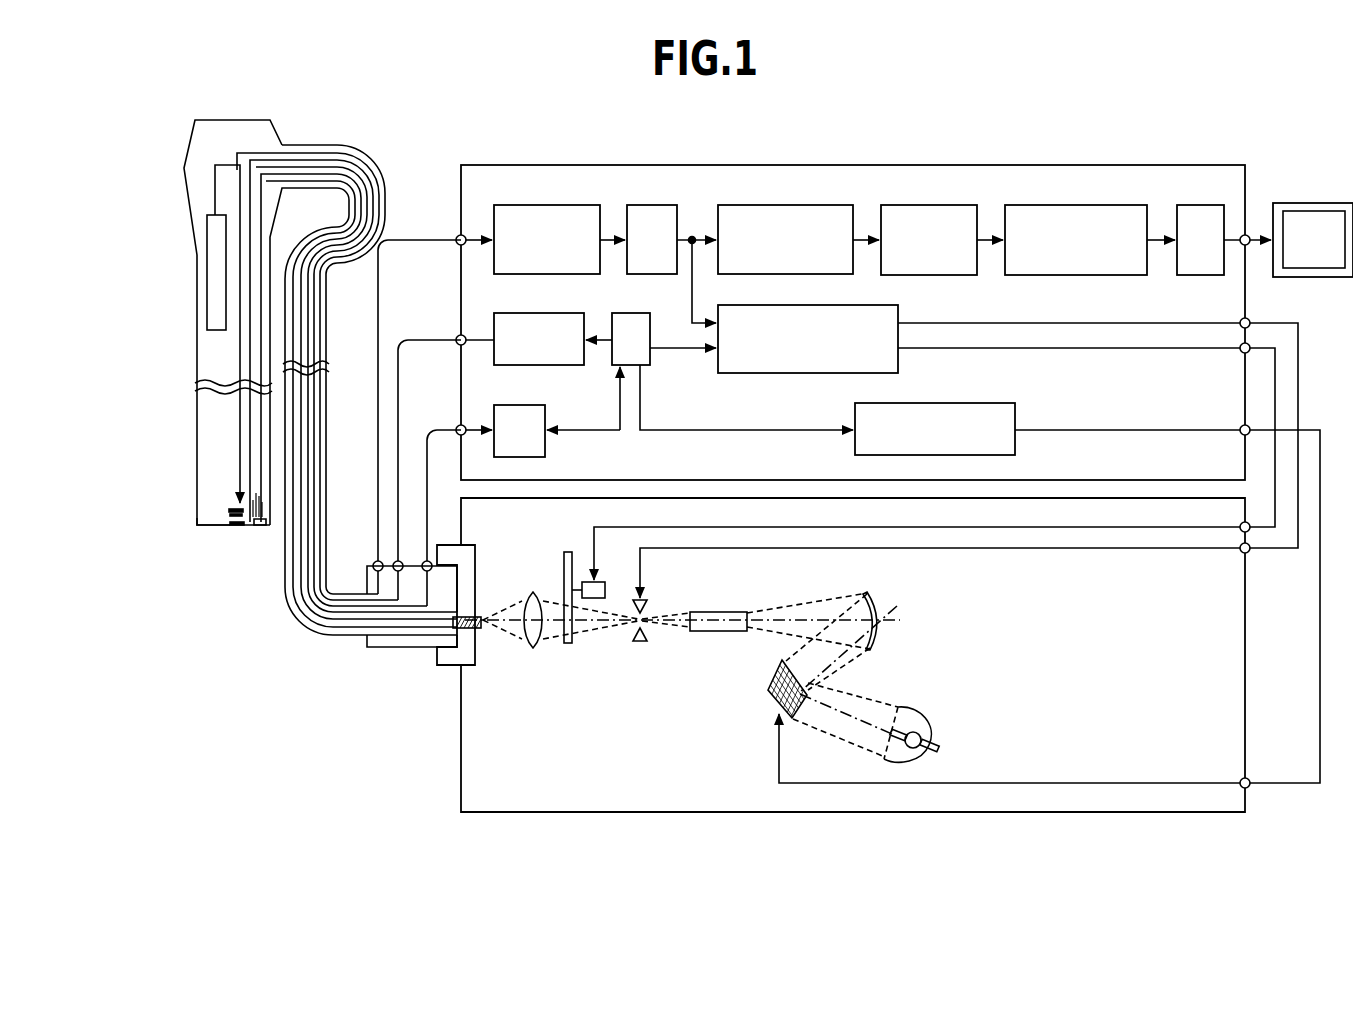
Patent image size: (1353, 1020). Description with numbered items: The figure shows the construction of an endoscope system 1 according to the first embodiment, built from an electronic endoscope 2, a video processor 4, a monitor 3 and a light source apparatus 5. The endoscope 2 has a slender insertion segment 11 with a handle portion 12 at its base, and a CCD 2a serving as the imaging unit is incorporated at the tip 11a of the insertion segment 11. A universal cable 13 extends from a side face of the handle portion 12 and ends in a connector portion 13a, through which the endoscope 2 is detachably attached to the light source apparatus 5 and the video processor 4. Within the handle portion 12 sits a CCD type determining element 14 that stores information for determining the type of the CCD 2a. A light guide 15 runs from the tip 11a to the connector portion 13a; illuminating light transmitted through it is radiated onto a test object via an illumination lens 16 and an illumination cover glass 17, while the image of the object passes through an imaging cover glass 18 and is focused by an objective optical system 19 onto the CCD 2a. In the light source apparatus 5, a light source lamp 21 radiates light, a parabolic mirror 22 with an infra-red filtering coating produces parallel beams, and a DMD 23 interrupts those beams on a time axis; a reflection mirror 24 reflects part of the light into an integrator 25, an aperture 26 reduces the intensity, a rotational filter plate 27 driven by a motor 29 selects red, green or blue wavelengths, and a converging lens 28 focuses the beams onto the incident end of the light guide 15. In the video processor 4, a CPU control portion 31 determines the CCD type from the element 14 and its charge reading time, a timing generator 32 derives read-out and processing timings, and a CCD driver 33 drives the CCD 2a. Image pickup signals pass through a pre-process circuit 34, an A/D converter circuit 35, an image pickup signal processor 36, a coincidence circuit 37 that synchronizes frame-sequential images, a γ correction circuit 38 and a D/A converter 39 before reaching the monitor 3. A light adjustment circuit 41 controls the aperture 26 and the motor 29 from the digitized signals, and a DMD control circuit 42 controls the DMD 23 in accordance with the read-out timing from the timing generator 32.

The endoscope system 1 is at (750, 147).
The electronic endoscope 2 is at (187, 328).
The CCD 2a is at (232, 512).
The monitor 3 is at (1316, 203).
The video processor 4 is at (870, 165).
The light source apparatus 5 is at (848, 812).
The insertion segment 11 is at (207, 422).
The tip 11a is at (196, 518).
The handle portion 12 is at (187, 163).
The universal cable 13 is at (378, 172).
The connector portion 13a is at (383, 648).
The CCD type determining element 14 is at (205, 252).
The light guide 15 is at (308, 615).
The illumination lens 16 is at (268, 528).
The illumination cover glass 17 is at (255, 533).
The imaging cover glass 18 is at (237, 532).
The objective optical system 19 is at (229, 516).
The light source lamp 21 is at (938, 751).
The parabolic mirror 22 is at (920, 710).
The DMD 23 is at (768, 692).
The reflection mirror 24 is at (883, 603).
The integrator 25 is at (717, 632).
The aperture 26 is at (635, 643).
The rotational filter plate 27 is at (568, 551).
The converging lens 28 is at (532, 594).
The motor 29 is at (604, 582).
The CPU control portion 31 is at (522, 405).
The timing generator 32 is at (633, 313).
The CCD driver 33 is at (543, 313).
The pre-process circuit 34 is at (552, 205).
The A/D converter circuit 35 is at (640, 205).
The image pickup signal processor 36 is at (787, 205).
The coincidence circuit 37 is at (928, 205).
The γ correction circuit 38 is at (1078, 205).
The D/A converter 39 is at (1192, 205).
The light adjustment circuit 41 is at (793, 305).
The DMD control circuit 42 is at (938, 403).